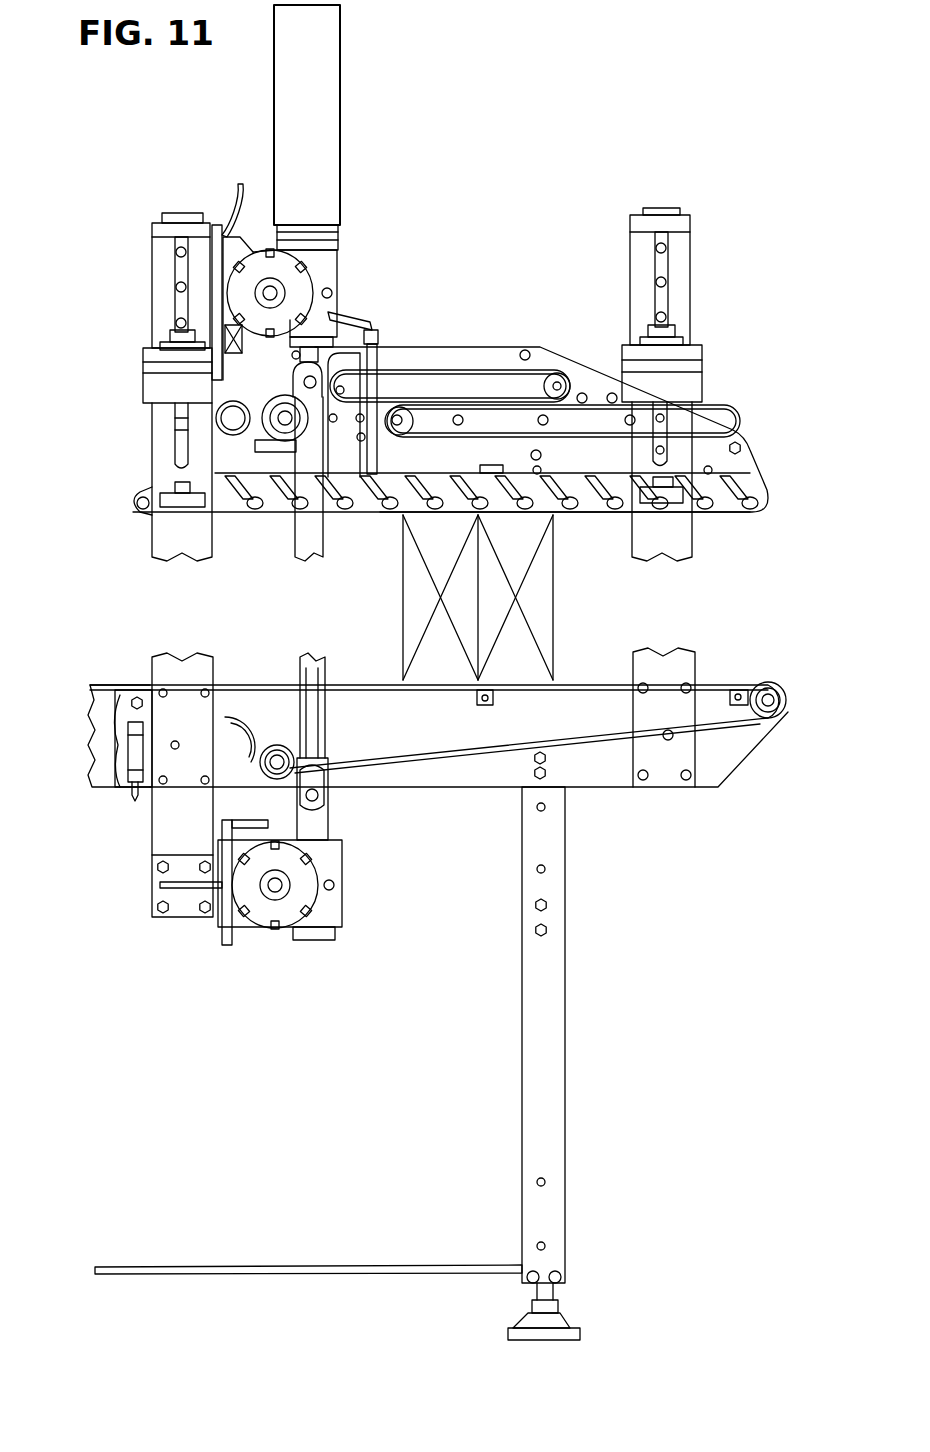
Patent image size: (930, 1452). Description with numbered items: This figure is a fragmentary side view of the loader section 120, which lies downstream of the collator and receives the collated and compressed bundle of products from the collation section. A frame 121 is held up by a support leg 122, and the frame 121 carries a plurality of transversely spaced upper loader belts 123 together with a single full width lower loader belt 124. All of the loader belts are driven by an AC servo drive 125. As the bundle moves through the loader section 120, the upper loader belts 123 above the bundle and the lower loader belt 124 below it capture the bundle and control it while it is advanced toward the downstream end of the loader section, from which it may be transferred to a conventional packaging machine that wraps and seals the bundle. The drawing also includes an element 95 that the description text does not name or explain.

The upper conveyor drive unit 120 is at (125, 438).
The locating pin assembly 121 is at (108, 775).
The support column 122 is at (550, 1108).
The upper conveyor frame 123 is at (725, 513).
The lower conveyor 124 is at (735, 690).
The pneumatic cylinder 125 is at (342, 130).
The truss spacer 95 is at (410, 600).